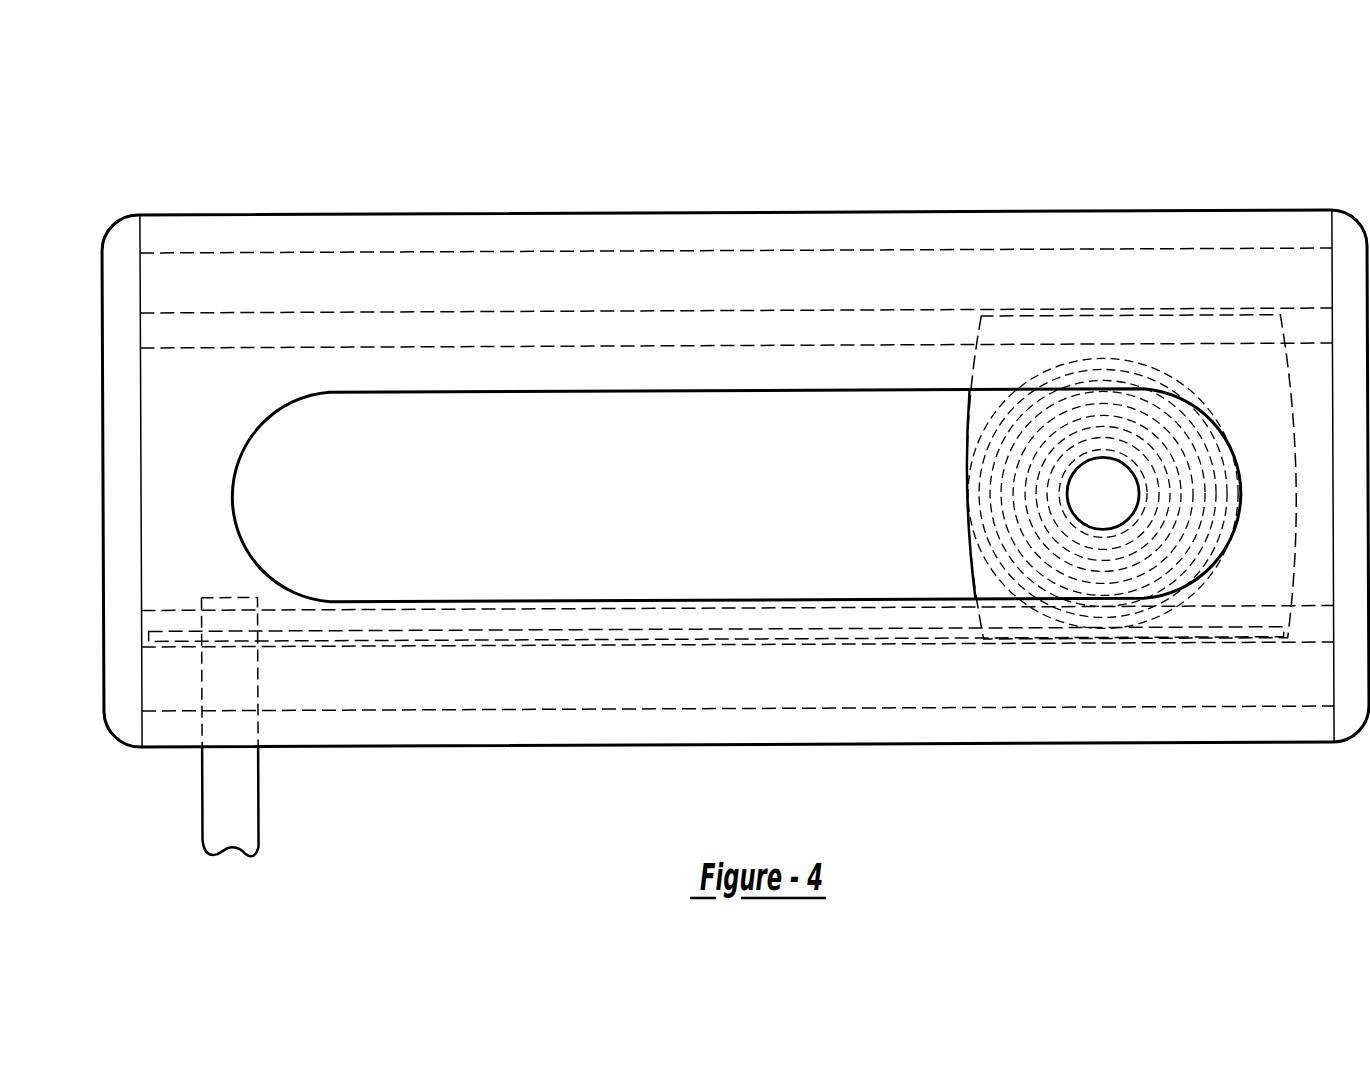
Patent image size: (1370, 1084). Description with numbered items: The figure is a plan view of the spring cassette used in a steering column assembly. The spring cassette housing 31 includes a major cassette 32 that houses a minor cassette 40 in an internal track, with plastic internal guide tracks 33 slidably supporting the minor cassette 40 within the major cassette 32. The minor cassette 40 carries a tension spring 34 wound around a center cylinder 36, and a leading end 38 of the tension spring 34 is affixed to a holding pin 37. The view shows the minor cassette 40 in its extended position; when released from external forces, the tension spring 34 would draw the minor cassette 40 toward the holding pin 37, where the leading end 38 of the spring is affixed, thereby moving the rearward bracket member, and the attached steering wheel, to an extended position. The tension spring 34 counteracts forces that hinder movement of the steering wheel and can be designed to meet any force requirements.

The spring cassette housing 31 is at (1041, 152).
The major cassette 32 is at (1202, 209).
The plastic internal guide tracks 33 is at (448, 312).
The tension spring 34 is at (1210, 578).
The center cylinder 36 is at (1097, 512).
The holding pin 37 is at (262, 798).
The leading end 38 is at (400, 637).
The minor cassette 40 is at (965, 438).